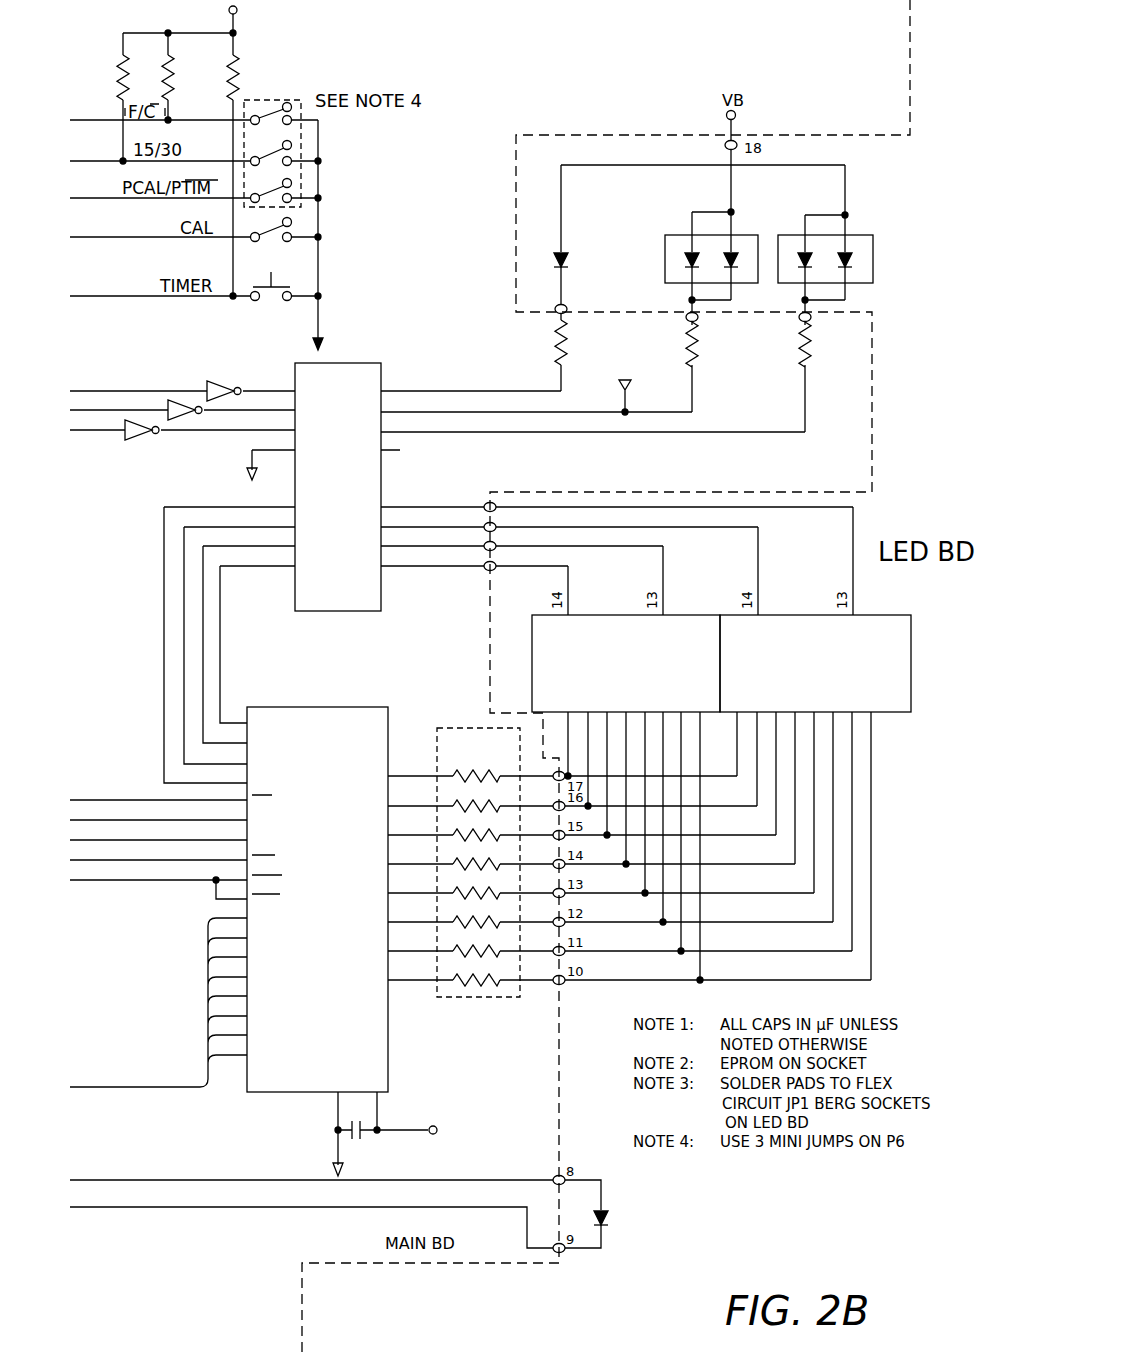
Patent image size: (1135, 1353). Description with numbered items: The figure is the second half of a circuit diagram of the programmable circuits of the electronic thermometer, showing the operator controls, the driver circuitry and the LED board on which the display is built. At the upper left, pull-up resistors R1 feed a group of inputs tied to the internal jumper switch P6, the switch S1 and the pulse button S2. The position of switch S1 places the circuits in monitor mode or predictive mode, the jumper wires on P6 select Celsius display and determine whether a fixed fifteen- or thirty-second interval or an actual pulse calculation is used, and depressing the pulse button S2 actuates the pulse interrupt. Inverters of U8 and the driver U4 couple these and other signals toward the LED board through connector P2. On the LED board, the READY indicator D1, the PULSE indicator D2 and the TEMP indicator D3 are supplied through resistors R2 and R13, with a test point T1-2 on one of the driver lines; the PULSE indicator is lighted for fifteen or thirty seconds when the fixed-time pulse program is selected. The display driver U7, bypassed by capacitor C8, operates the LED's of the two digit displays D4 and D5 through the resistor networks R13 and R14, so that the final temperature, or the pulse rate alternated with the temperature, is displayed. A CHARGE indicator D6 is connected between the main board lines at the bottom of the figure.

The 47K pull-up resistors R1 is at (181, 150).
The internal jumper switch P6 is at (281, 151).
The switch S1 is at (284, 234).
The pulse button S2 is at (284, 296).
The CD4068 inverters U8 is at (182, 403).
The ULN2003 driver U4 is at (508, 487).
The READY LED D1 is at (587, 261).
The PULSE LED D2 is at (711, 256).
The TEMP LED D3 is at (825, 243).
The 330 ohm resistor network R13 is at (496, 650).
The 330 ohm resistor network R14 is at (470, 862).
The 68 ohm resistors R2 is at (748, 374).
The test point T1-2 is at (621, 387).
The connector P2 is at (497, 520).
The display D4 is at (626, 799).
The display D5 is at (815, 797).
The display driver U7 is at (267, 941).
The 0.1 uF capacitor C8 is at (365, 1155).
The CHARGE LED D6 is at (645, 1205).